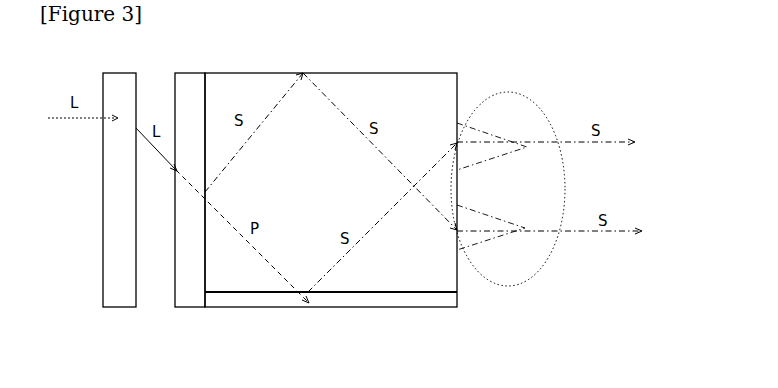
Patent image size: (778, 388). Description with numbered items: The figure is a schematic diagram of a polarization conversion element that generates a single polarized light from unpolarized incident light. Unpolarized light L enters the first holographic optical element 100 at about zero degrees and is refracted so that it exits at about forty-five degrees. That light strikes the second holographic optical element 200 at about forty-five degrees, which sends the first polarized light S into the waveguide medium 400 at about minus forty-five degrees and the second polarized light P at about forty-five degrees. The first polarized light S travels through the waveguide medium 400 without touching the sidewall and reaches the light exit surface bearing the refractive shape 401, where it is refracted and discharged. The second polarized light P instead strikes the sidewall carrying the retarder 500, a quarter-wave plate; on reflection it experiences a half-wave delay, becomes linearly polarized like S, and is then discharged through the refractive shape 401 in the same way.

The first holographic optical element 100 is at (121, 73).
The second holographic optical element 200 is at (192, 73).
The waveguide medium 400 is at (355, 73).
The refractive shape 401 is at (508, 92).
The retarder 500 is at (458, 301).